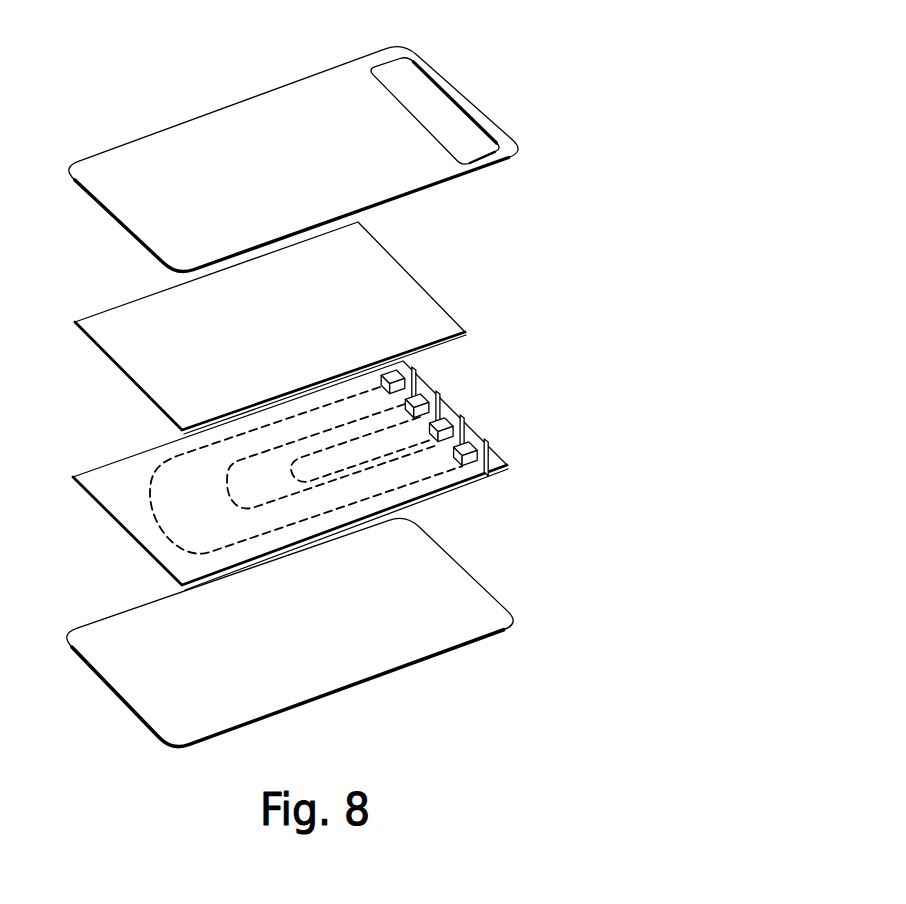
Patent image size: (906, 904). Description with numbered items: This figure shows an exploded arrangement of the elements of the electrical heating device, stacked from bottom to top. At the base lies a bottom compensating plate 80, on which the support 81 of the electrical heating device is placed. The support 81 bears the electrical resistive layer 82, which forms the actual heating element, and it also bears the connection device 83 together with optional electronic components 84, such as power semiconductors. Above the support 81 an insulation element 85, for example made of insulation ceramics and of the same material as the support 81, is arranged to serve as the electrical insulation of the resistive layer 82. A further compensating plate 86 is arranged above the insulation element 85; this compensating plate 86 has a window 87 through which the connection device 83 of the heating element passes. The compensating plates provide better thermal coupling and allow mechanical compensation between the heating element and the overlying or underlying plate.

The bottom compensating plate 80 is at (462, 673).
The support 81 is at (475, 510).
The electrical resistive layer 82 is at (140, 521).
The connection device 83 is at (305, 468).
The electronic components 84 is at (488, 441).
The insulation element 85 is at (444, 265).
The compensating plate 86 is at (490, 102).
The window 87 is at (420, 98).